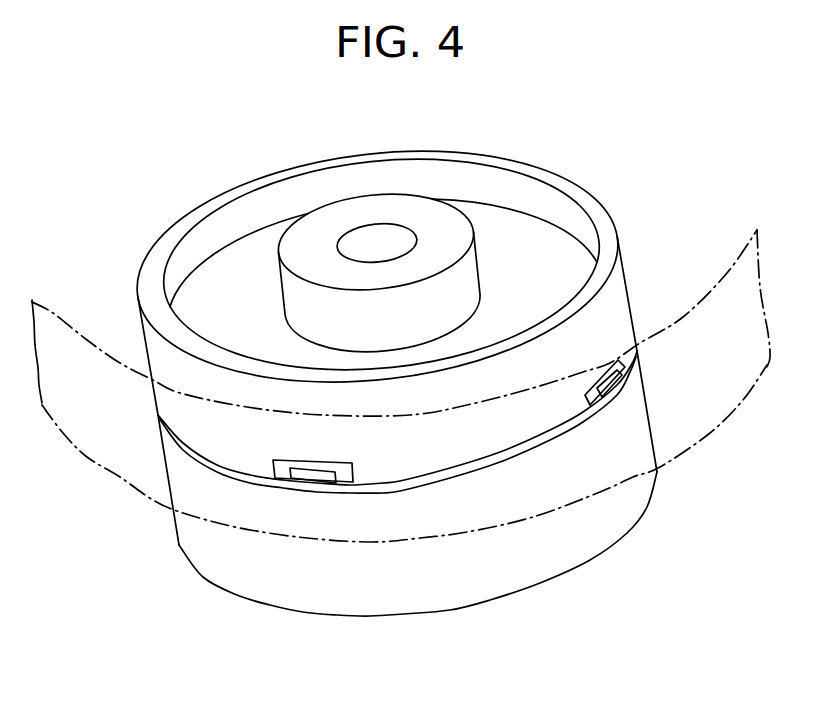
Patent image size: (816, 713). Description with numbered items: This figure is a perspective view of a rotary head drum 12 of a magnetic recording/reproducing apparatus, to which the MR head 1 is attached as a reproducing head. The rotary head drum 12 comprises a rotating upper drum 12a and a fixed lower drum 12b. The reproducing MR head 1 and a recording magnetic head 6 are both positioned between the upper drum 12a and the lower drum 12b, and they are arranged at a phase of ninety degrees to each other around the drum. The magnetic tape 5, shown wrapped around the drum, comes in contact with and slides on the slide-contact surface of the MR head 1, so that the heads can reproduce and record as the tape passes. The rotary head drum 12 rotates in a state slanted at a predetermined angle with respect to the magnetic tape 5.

The rotary head drum 12 is at (347, 364).
The upper drum 12a is at (157, 348).
The lower drum 12b is at (192, 538).
The MR head 1 is at (310, 478).
The recording magnetic head 6 is at (618, 358).
The magnetic tape 5 is at (703, 417).